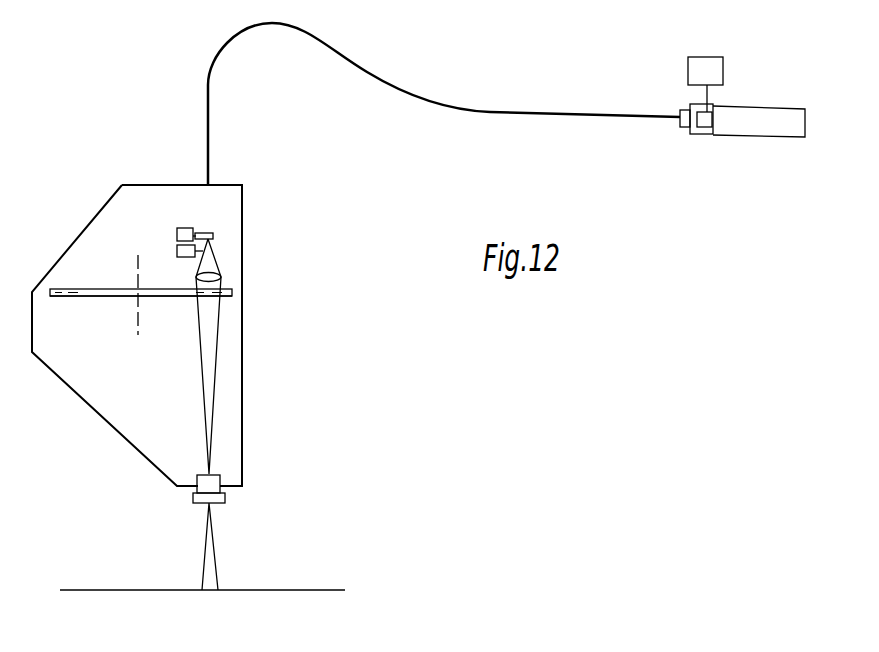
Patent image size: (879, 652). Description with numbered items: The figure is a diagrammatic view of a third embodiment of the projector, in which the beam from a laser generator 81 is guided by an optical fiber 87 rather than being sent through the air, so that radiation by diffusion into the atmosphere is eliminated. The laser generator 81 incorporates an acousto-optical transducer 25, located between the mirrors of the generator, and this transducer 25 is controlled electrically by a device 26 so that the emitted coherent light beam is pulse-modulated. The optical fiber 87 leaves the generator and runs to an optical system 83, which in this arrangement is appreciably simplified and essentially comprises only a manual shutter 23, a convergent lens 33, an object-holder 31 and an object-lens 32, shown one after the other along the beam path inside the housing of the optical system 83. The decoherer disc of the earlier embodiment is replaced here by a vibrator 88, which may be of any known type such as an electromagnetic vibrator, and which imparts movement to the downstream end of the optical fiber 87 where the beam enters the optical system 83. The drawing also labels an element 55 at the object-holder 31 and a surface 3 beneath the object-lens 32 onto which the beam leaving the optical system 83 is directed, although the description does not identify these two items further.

The workpiece surface 3 is at (287, 590).
The manual shutter 23 is at (177, 249).
The acousto-optical transducer 25 is at (700, 127).
The control device 26 is at (698, 63).
The object-holder 31 is at (115, 288).
The object-lens 32 is at (205, 485).
The convergent lens 33 is at (222, 277).
The scale 55 is at (103, 297).
The laser generator 81 is at (748, 103).
The optical system 83 is at (83, 403).
The optical fiber 87 is at (367, 77).
The vibrator 88 is at (183, 228).